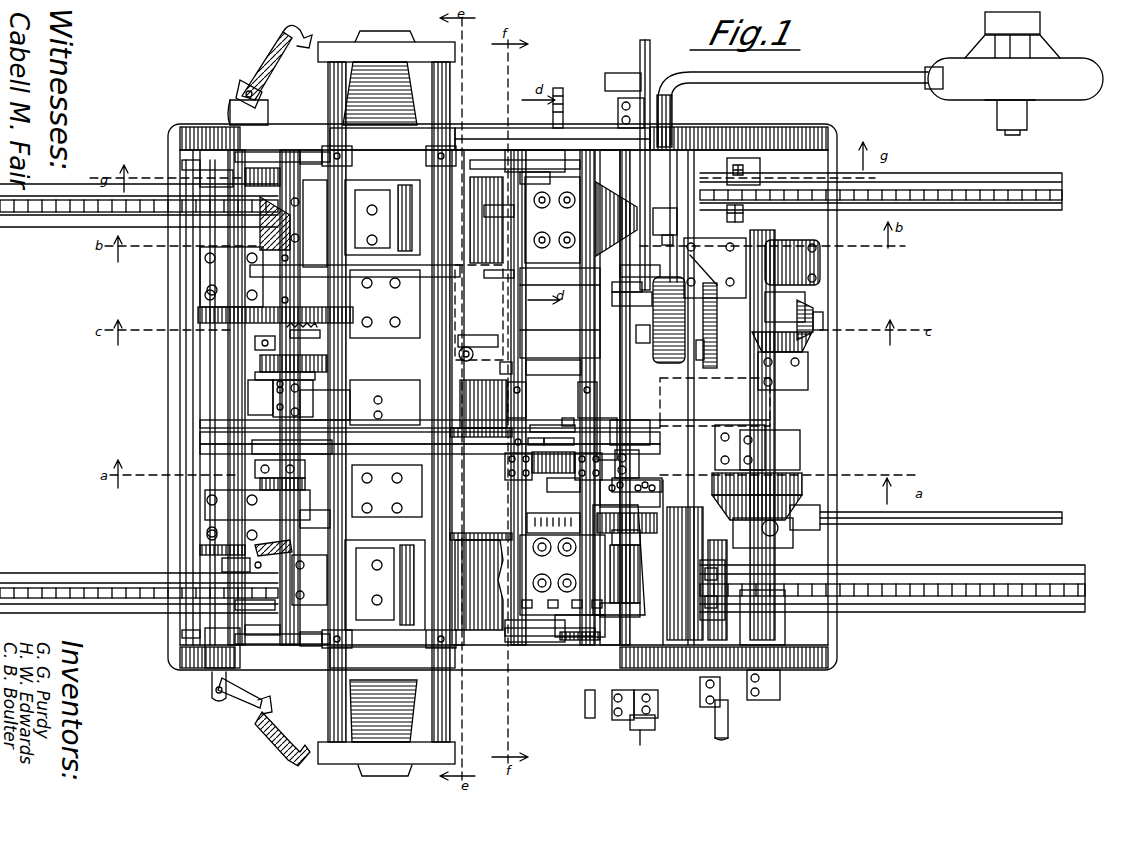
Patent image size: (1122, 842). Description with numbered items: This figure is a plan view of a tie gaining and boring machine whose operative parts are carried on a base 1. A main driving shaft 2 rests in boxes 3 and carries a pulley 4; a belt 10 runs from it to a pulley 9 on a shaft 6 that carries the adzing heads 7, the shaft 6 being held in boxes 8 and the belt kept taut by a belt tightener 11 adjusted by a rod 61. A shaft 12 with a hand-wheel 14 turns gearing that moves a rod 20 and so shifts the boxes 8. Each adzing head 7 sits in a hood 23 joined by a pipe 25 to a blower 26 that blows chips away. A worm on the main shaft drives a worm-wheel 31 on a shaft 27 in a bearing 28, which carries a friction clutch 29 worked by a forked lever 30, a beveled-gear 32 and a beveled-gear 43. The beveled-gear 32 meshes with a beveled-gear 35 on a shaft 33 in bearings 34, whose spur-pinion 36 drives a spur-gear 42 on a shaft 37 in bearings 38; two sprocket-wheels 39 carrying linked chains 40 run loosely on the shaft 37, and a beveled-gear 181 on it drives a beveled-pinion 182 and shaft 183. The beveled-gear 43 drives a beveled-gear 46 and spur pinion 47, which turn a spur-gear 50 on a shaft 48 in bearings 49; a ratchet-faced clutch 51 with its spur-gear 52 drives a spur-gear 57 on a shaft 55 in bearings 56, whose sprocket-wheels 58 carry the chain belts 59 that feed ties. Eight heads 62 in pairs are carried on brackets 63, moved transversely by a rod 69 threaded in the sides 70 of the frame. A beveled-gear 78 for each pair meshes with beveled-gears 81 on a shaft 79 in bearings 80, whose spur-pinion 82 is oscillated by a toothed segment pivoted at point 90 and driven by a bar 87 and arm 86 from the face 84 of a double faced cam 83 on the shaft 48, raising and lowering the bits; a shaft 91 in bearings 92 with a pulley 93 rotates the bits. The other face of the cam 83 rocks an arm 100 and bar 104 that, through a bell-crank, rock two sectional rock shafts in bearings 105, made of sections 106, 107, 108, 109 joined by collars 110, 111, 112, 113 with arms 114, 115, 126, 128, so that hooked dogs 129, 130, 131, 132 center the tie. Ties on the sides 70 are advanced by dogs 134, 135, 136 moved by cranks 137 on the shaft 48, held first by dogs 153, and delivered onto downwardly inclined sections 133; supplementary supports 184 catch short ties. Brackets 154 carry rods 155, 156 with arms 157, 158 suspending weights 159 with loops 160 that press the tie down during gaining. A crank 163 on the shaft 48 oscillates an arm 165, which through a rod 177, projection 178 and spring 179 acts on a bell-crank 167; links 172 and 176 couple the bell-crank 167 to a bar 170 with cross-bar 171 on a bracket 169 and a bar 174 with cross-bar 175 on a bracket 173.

The base 1 is at (836, 420).
The main driving shaft 2 is at (728, 732).
The boxes 3 is at (705, 360).
The pulley 4 is at (672, 420).
The shaft 6 is at (376, 428).
The adzing heads 7 is at (385, 405).
The boxes 8 is at (386, 393).
The pulley 9 is at (360, 402).
The belt 10 is at (553, 372).
The belt tightener 11 is at (481, 408).
The shaft 12 is at (245, 436).
The hand-wheel 14 is at (245, 450).
The rod 20 is at (455, 305).
The hood 23 is at (460, 150).
The pipe 25 is at (690, 61).
The blower 26 is at (1015, 73).
The shaft 27 is at (560, 313).
The bearing 28 is at (785, 300).
The friction clutch 29 is at (656, 360).
The forked lever 30 is at (642, 343).
The worm-wheel 31 is at (815, 314).
The beveled-gear 32 is at (823, 320).
The shaft 33 is at (775, 405).
The bearings 34 is at (808, 370).
The beveled-gear 35 is at (805, 345).
The spur-pinion 36 is at (802, 476).
The shaft 37 is at (793, 525).
The bearings 38 is at (820, 260).
The sprocket-wheels 39 is at (790, 190).
The linked chains 40 is at (1022, 200).
The spur-gear 42 is at (780, 470).
The beveled-gear 43 is at (455, 343).
The beveled-gear 46 is at (260, 358).
The spur pinion 47 is at (248, 392).
The shaft 48 is at (305, 500).
The bearings 49 is at (240, 240).
The spur-gear 50 is at (255, 376).
The ratchet-faced clutch 51 is at (255, 338).
The spur-gear 52 is at (205, 292).
The shaft 55 is at (210, 412).
The bearings 56 is at (205, 272).
The spur-gear 57 is at (198, 316).
The sprocket-wheels 58 is at (175, 200).
The chain belts 59 is at (38, 218).
The rod 61 is at (474, 354).
The heads 62 is at (562, 573).
The bracket 63 is at (555, 302).
The rod 69 is at (556, 96).
The sides 70 is at (545, 135).
The beveled-gear 78 is at (635, 272).
The shaft 79 is at (630, 392).
The bearings 80 is at (650, 110).
The beveled-gears 81 is at (640, 298).
The spur-pinion 82 is at (650, 480).
The double faced cam 83 is at (252, 447).
The face 84 is at (640, 533).
The arm 86 is at (255, 468).
The bar 87 is at (525, 462).
The point 90 is at (550, 488).
The shaft 91 is at (642, 732).
The bearings 92 is at (658, 705).
The pulley 93 is at (618, 73).
The arm 100 is at (282, 398).
The bar 104 is at (186, 420).
The bearings 105 is at (518, 150).
The rock shaft section 106 is at (526, 366).
The rock shaft section 107 is at (530, 506).
The rock shaft section 108 is at (527, 366).
The rock shaft section 109 is at (610, 484).
The collar 110 is at (530, 399).
The collar 111 is at (576, 397).
The collar 112 is at (512, 442).
The collar 113 is at (606, 418).
The arm 114 is at (538, 422).
The arm 115 is at (572, 412).
The arm 126 is at (555, 427).
The arm 128 is at (552, 412).
The hooked dog 129 is at (495, 241).
The hooked dog 130 is at (481, 581).
The hooked dog 131 is at (617, 219).
The hooked dog 132 is at (640, 583).
The downwardly inclined sections 133 is at (780, 140).
The dog 134 is at (282, 401).
The dog 135 is at (535, 160).
The dog 136 is at (590, 642).
The cranks 137 is at (268, 168).
The dogs 153 is at (203, 128).
The bracket 154 is at (380, 32).
The rod 155 is at (328, 74).
The rod 156 is at (450, 80).
The arms 157 is at (328, 146).
The arms 158 is at (435, 146).
The weights 159 is at (302, 150).
The loop 160 is at (392, 398).
The crank 163 is at (300, 518).
The arm 165 is at (309, 580).
The bell-crank 167 is at (235, 605).
The bracket 169 is at (217, 704).
The bar 170 is at (248, 708).
The cross-bar 171 is at (284, 752).
The link 172 is at (258, 708).
The bracket 173 is at (243, 90).
The bar 174 is at (268, 62).
The cross-bar 175 is at (306, 42).
The link 176 is at (245, 126).
The rod 177 is at (210, 558).
The projection 178 is at (230, 558).
The spring 179 is at (273, 557).
The beveled-gear 181 is at (718, 505).
The beveled-pinion 182 is at (926, 517).
The shaft 183 is at (1010, 524).
The supplementary supports 184 is at (185, 165).